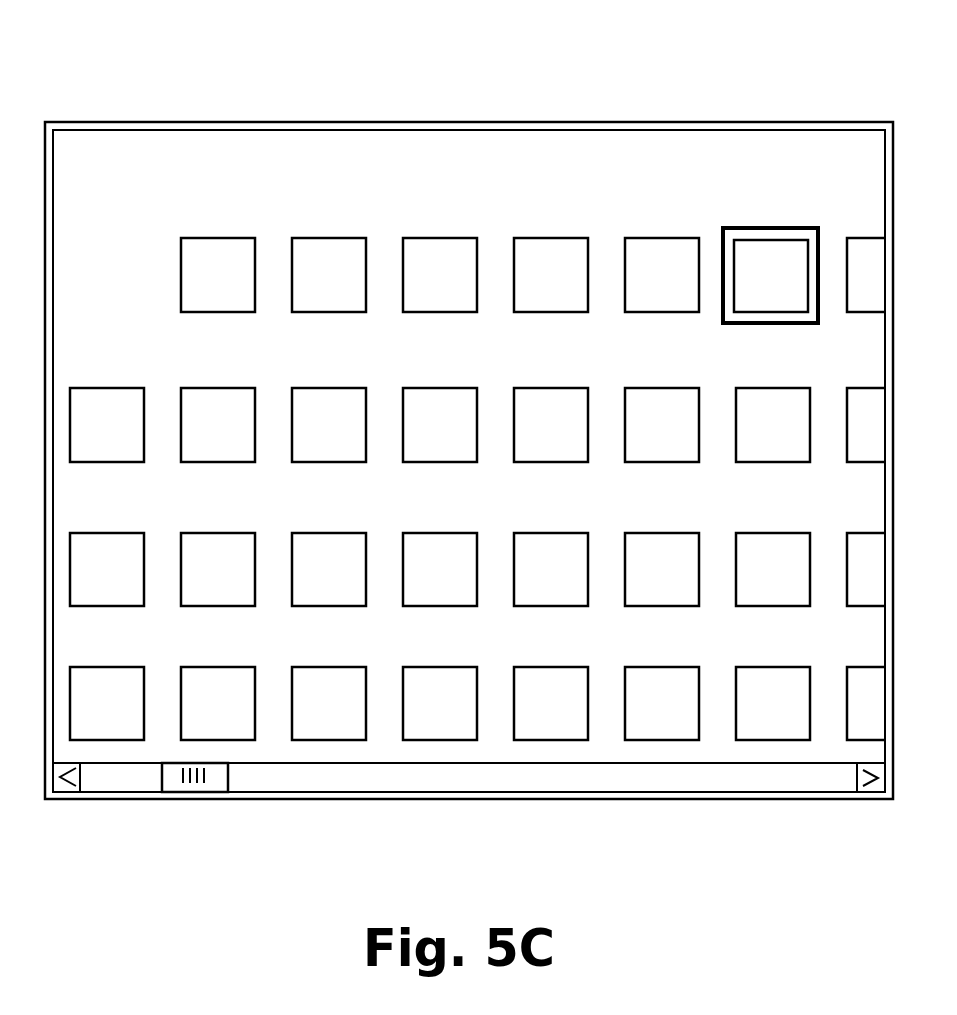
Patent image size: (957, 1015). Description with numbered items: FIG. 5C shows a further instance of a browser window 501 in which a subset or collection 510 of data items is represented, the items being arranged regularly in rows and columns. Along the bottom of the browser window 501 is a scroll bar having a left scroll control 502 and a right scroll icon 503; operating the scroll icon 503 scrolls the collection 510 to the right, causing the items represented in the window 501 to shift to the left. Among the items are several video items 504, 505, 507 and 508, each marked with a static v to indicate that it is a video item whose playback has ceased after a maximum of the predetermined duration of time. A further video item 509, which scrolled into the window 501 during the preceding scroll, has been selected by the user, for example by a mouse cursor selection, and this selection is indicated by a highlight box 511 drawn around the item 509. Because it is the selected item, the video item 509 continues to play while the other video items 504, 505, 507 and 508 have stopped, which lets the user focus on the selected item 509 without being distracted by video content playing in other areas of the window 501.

The browser window 501 is at (408, 126).
The left scroll arrow 502 is at (62, 788).
The scroll icon 503 is at (873, 790).
The video item 504 is at (143, 605).
The video item 505 is at (235, 605).
The video item 507 is at (108, 393).
The video item 508 is at (335, 393).
The video item 509 is at (759, 232).
The collection of data items 510 is at (214, 183).
The highlight box 511 is at (790, 228).